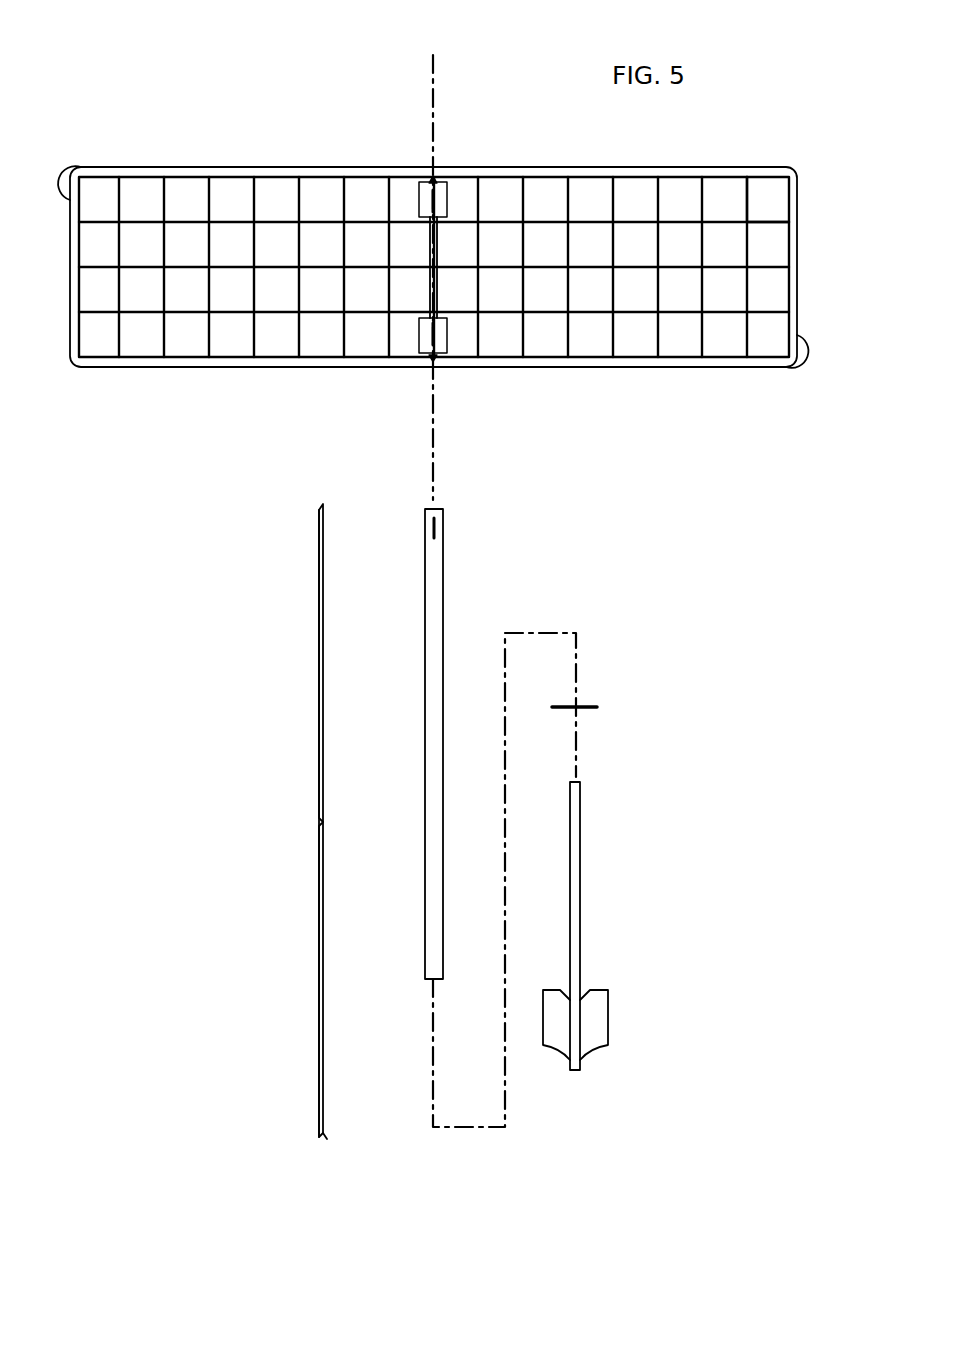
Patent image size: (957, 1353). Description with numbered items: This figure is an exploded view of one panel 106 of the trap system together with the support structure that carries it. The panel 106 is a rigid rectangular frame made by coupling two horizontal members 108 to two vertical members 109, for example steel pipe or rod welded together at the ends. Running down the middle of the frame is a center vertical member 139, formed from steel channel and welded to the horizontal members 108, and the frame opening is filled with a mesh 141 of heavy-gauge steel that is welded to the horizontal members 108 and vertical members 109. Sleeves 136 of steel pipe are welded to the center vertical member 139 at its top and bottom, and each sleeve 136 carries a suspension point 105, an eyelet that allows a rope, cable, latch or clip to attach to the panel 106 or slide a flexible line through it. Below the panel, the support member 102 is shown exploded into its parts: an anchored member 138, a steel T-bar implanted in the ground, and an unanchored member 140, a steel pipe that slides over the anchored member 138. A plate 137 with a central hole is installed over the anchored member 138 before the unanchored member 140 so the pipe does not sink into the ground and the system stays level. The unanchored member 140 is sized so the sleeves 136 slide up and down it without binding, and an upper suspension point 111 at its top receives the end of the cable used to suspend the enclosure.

The support member 102 is at (319, 818).
The suspension point 105 is at (419, 198).
The panel 106 is at (275, 167).
The horizontal member 108 is at (560, 168).
The vertical member 109 is at (68, 200).
The upper suspension point 111 is at (437, 528).
The sleeve 136 is at (447, 198).
The plate 137 is at (590, 705).
The anchored member 138 is at (580, 898).
The center vertical member 139 is at (438, 255).
The unanchored member 140 is at (425, 850).
The mesh 141 is at (773, 220).